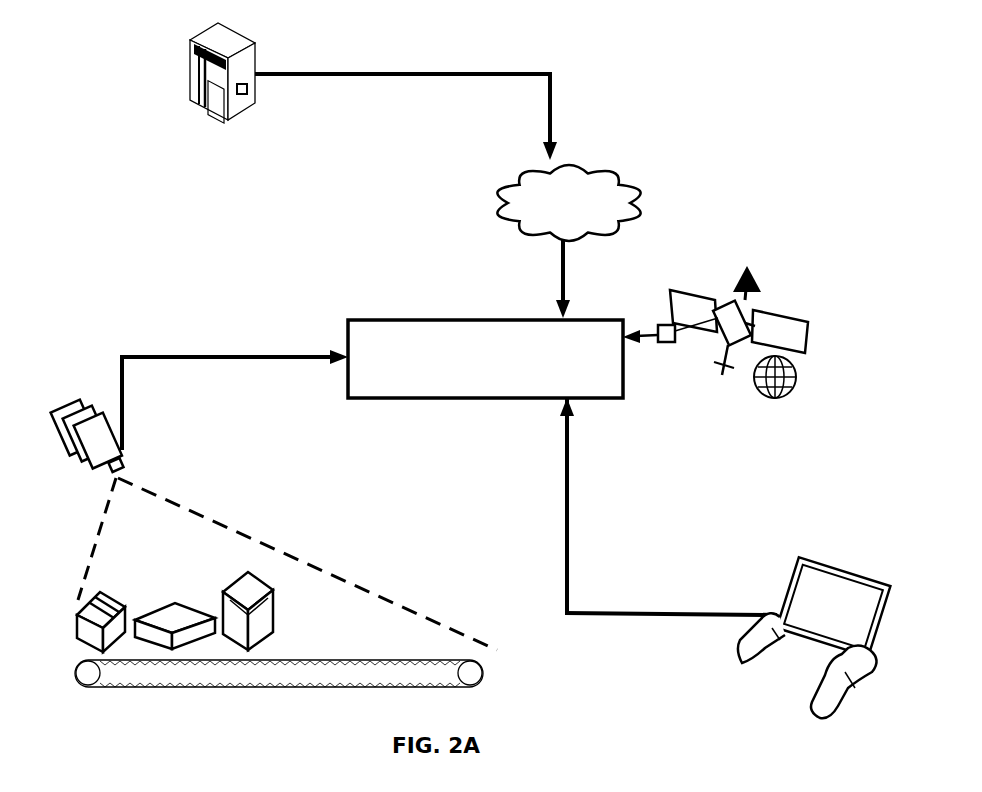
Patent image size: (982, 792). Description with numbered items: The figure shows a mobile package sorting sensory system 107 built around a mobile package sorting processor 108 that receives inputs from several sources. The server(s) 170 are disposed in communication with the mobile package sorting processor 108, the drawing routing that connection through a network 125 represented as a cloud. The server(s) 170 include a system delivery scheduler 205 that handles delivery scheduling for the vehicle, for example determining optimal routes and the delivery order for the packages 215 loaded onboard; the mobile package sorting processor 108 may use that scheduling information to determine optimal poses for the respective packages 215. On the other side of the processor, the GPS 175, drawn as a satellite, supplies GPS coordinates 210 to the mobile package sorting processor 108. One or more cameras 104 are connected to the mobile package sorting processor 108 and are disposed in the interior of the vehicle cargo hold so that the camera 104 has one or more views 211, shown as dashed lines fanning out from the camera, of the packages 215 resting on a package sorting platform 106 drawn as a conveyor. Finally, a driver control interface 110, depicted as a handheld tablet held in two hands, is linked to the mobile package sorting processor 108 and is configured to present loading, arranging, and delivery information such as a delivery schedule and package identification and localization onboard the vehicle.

The mobile package sorting sensory system 107 is at (841, 116).
The server(s) 170 is at (285, 148).
The system delivery scheduler 205 is at (406, 121).
The network 125 is at (622, 212).
The mobile package sorting processor 108 is at (498, 390).
The GPS 175 is at (737, 400).
The GPS coordinates 210 is at (672, 342).
The cameras 104 is at (80, 407).
The views 211 is at (436, 621).
The packages 215 is at (200, 608).
The package sorting platform 106 is at (487, 673).
The driver control interface 110 is at (845, 568).